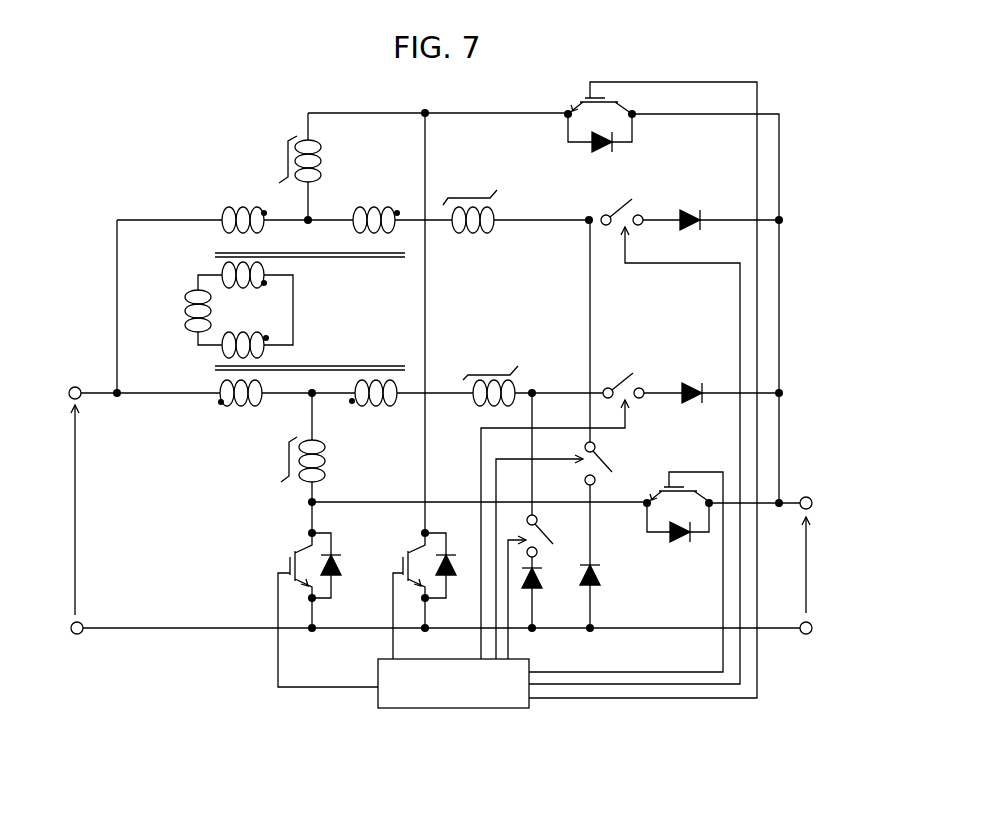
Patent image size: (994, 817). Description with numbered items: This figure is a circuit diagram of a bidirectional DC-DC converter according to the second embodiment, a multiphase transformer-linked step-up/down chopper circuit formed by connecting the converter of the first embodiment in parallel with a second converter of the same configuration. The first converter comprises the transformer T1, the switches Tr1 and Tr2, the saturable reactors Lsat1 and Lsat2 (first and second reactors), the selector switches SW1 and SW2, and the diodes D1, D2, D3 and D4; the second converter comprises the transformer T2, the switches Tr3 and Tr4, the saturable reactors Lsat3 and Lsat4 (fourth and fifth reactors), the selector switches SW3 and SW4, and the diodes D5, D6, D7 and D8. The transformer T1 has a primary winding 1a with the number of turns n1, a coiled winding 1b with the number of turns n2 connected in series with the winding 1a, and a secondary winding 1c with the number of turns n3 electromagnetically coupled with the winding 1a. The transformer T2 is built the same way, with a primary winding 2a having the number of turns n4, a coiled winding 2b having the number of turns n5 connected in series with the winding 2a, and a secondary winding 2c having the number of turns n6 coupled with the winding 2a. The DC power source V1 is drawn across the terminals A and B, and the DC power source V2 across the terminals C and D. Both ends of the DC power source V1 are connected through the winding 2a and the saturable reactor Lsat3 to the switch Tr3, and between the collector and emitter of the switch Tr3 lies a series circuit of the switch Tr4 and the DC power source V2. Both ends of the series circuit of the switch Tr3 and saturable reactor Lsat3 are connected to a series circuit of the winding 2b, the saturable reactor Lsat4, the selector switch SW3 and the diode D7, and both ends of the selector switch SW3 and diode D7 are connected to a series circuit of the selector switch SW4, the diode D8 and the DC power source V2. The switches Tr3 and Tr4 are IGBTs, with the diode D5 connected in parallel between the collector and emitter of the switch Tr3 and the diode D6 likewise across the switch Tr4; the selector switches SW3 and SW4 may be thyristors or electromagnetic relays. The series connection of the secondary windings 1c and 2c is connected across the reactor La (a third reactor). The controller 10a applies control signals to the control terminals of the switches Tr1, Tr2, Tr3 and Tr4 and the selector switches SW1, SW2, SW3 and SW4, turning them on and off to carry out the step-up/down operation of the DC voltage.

The winding 2a is at (230, 203).
The winding 2b is at (367, 203).
The winding 2c is at (273, 288).
The winding 1a is at (246, 420).
The winding 1b is at (378, 420).
The winding 1c is at (273, 336).
The controller 10a is at (452, 708).
The transformer T1 is at (299, 379).
The transformer T2 is at (299, 257).
The reactor La is at (184, 311).
The number of turns n1 is at (229, 410).
The number of turns n2 is at (362, 410).
The number of turns n3 is at (245, 337).
The number of turns n4 is at (213, 193).
The number of turns n5 is at (352, 193).
The number of turns n6 is at (244, 288).
The saturable reactor Lsat1 is at (289, 476).
The saturable reactor Lsat2 is at (489, 377).
The saturable reactor Lsat3 is at (281, 159).
The saturable reactor Lsat4 is at (468, 203).
The switch Tr1 is at (278, 569).
The switch Tr2 is at (679, 474).
The switch Tr3 is at (392, 569).
The switch Tr4 is at (600, 85).
The diode D1 is at (336, 565).
The diode D2 is at (678, 537).
The diode D3 is at (545, 592).
The diode D4 is at (693, 408).
The diode D5 is at (450, 565).
The diode D6 is at (600, 147).
The diode D7 is at (603, 590).
The diode D8 is at (692, 231).
The selector switch SW1 is at (554, 536).
The selector switch SW2 is at (630, 375).
The selector switch SW3 is at (613, 463).
The selector switch SW4 is at (608, 206).
The terminal A is at (74, 383).
The terminal B is at (75, 644).
The terminal C is at (805, 491).
The terminal D is at (805, 644).
The DC power source V1 is at (59, 510).
The DC power source V2 is at (819, 565).